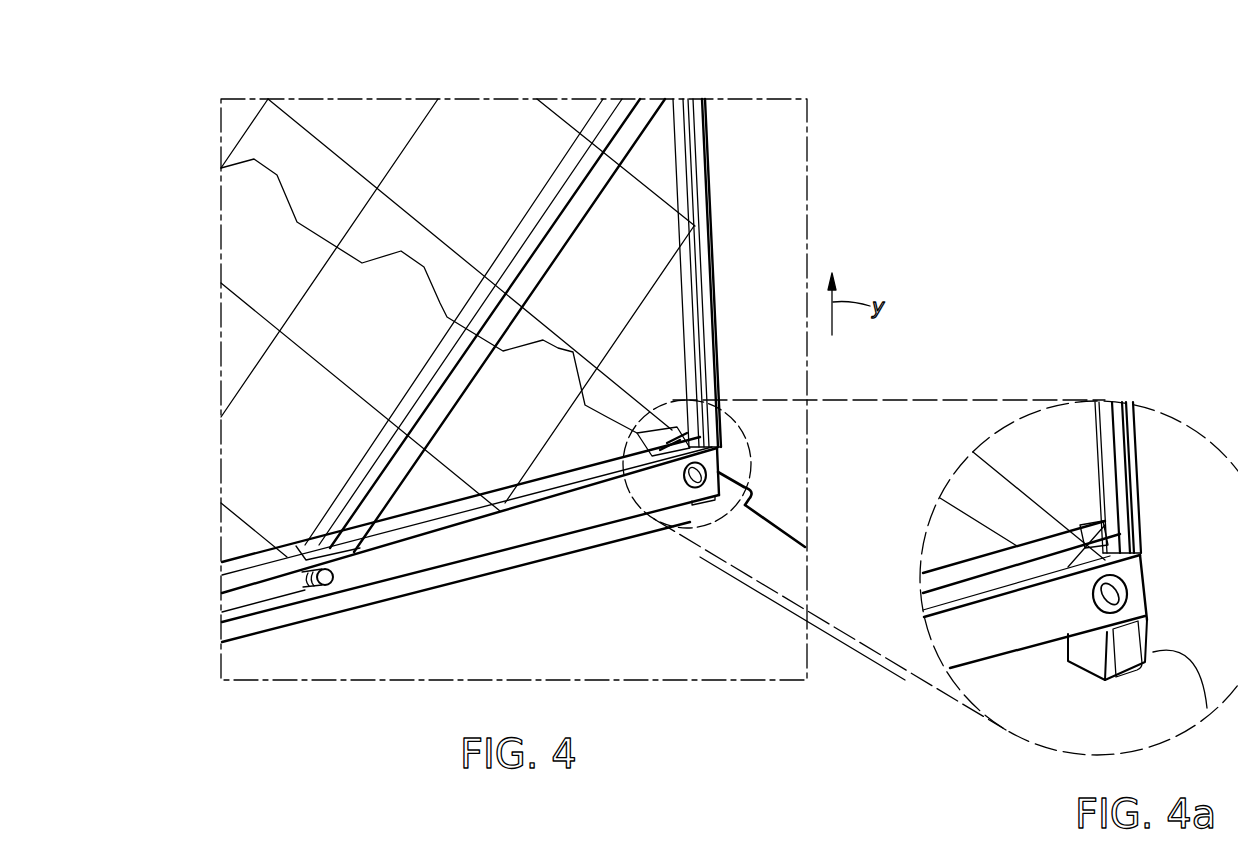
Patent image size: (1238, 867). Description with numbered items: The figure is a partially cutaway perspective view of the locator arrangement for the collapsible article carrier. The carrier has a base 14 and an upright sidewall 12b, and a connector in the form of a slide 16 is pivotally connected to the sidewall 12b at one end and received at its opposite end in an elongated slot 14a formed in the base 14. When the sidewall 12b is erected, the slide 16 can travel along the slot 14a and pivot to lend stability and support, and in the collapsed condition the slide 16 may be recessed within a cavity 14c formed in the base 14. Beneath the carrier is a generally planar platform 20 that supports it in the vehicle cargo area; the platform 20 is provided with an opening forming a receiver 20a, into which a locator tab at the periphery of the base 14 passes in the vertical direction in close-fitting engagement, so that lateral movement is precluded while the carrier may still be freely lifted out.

In FIG. 4, the sidewall 12b is at (693, 110).
In FIG. 4A, the sidewall 12b is at (1130, 423).
In FIG. 4A, the base 14 is at (965, 668).
In FIG. 4, the elongated slot 14a is at (220, 603).
In FIG. 4, the cavity 14c is at (220, 568).
In FIG. 4, the slide 16 is at (630, 110).
In FIG. 4, the platform 20 is at (765, 543).
In FIG. 4, the receiver 20a is at (700, 528).